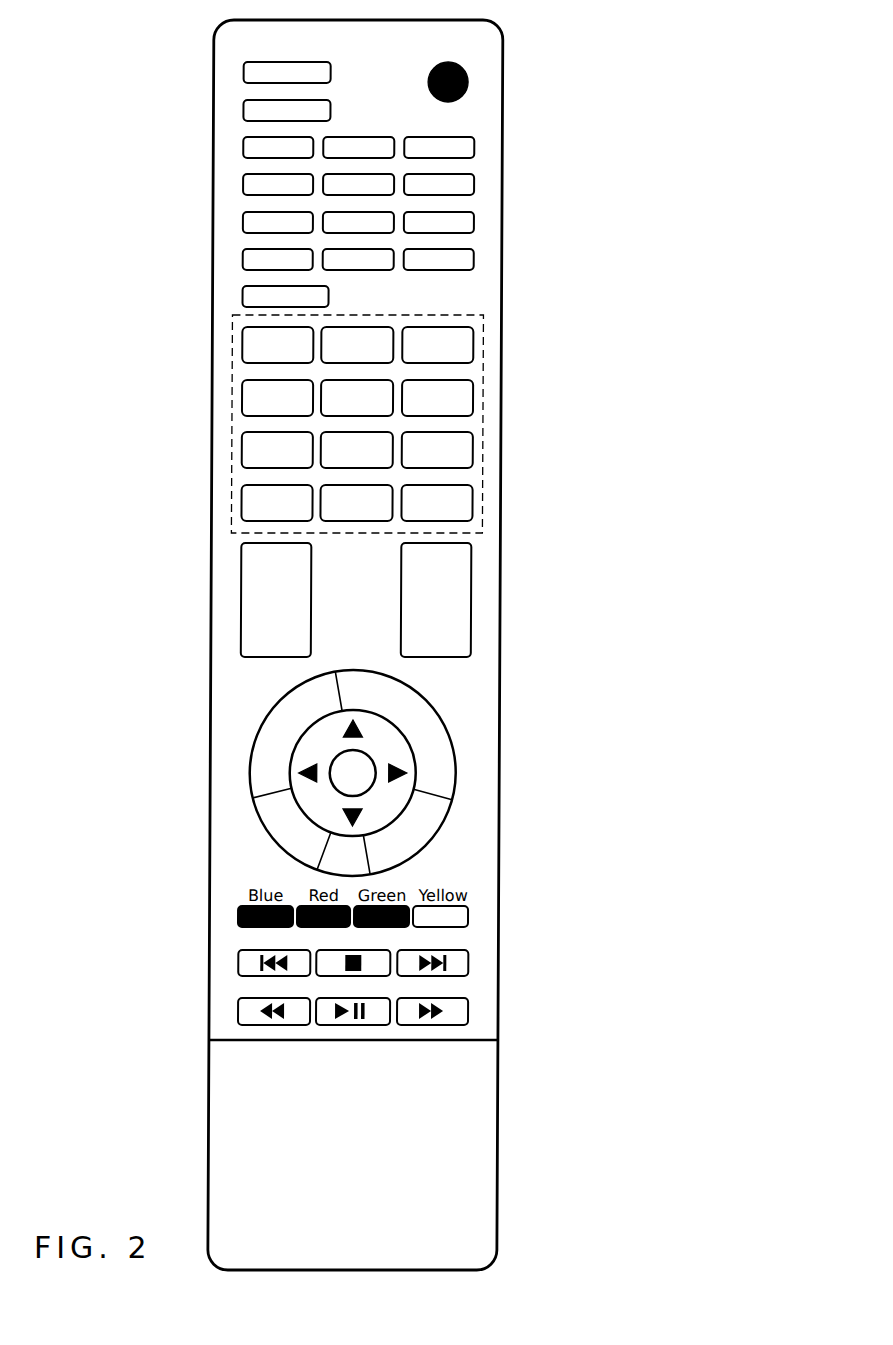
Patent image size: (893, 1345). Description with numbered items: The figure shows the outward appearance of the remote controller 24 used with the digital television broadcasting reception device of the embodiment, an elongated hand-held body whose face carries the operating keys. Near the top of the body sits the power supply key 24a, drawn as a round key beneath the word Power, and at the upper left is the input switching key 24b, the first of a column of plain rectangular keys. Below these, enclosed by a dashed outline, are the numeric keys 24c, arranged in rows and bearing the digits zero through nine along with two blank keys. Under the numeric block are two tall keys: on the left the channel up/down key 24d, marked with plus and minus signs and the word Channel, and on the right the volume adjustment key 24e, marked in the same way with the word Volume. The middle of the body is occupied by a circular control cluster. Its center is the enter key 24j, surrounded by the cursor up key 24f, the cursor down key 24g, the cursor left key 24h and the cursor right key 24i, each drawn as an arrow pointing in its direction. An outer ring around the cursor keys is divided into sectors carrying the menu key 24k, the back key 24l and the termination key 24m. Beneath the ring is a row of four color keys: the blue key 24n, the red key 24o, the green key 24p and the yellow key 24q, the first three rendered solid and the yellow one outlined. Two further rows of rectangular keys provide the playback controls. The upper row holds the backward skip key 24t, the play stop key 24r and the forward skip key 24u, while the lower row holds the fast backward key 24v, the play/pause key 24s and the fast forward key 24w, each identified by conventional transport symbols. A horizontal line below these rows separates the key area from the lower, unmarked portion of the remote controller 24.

The remote controller 24 is at (503, 38).
The power supply key 24a is at (469, 85).
The input switching key 24b is at (245, 76).
The numeric keys 24c is at (486, 396).
The channel up/down key 24d is at (245, 578).
The volume adjustment key 24e is at (474, 600).
The cursor up key 24f is at (366, 728).
The cursor down key 24g is at (366, 815).
The cursor left key 24h is at (304, 778).
The cursor right key 24i is at (410, 776).
The enter key 24j is at (338, 762).
The menu key 24k is at (303, 684).
The back key 24l is at (268, 826).
The termination key 24m is at (436, 840).
The blue key 24n is at (271, 928).
The red key 24o is at (303, 903).
The green key 24p is at (414, 905).
The yellow key 24q is at (473, 915).
The play stop key 24r is at (343, 978).
The play/pause key 24s is at (354, 1026).
The backward skip key 24t is at (243, 965).
The forward skip key 24u is at (473, 965).
The fast backward key 24v is at (285, 1026).
The fast forward key 24w is at (473, 1012).